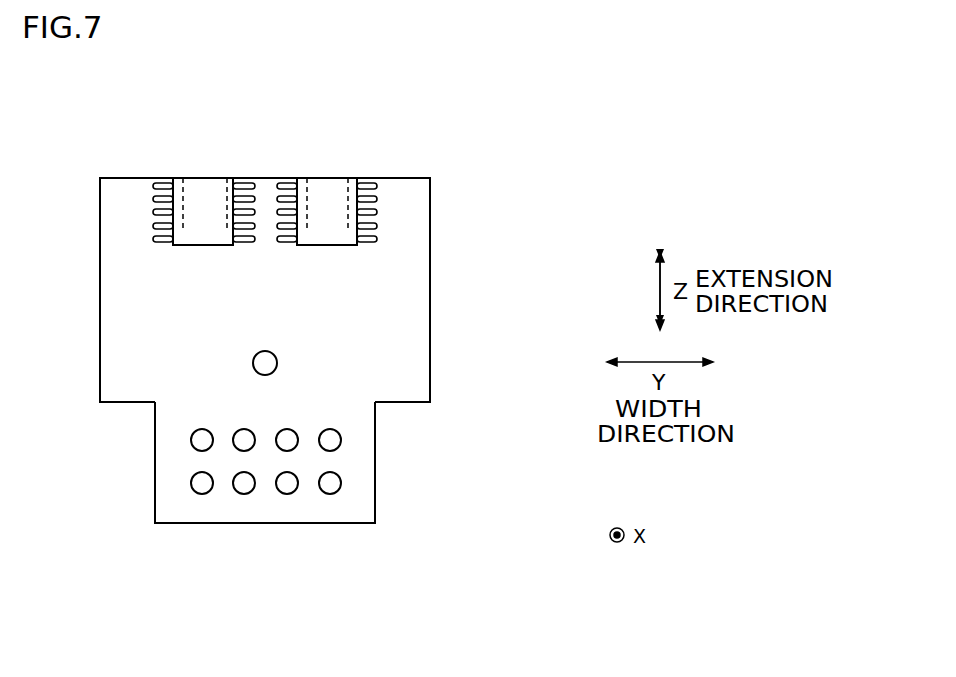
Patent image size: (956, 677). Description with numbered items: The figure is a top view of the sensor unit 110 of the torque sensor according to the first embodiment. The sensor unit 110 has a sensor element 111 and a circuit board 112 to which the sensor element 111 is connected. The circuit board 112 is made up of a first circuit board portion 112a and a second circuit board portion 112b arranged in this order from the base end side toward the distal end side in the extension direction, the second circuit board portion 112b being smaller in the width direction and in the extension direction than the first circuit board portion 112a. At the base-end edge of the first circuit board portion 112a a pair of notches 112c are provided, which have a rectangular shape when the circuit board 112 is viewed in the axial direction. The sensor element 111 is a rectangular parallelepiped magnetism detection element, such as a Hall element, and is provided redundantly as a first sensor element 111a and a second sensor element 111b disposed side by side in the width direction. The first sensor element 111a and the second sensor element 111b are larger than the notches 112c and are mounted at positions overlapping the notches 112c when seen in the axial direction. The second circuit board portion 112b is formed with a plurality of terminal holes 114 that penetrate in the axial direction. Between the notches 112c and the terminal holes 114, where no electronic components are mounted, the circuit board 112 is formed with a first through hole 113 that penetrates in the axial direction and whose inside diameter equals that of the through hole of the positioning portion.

The sensor unit 110 is at (447, 128).
The sensor element 111 is at (265, 256).
The first sensor element 111a is at (230, 245).
The second sensor element 111b is at (327, 237).
The circuit board 112 is at (515, 373).
The first circuit board portion 112a is at (429, 378).
The second circuit board portion 112b is at (363, 428).
The notches 112c is at (186, 189).
The first through hole 113 is at (276, 362).
The terminal holes 114 is at (332, 486).